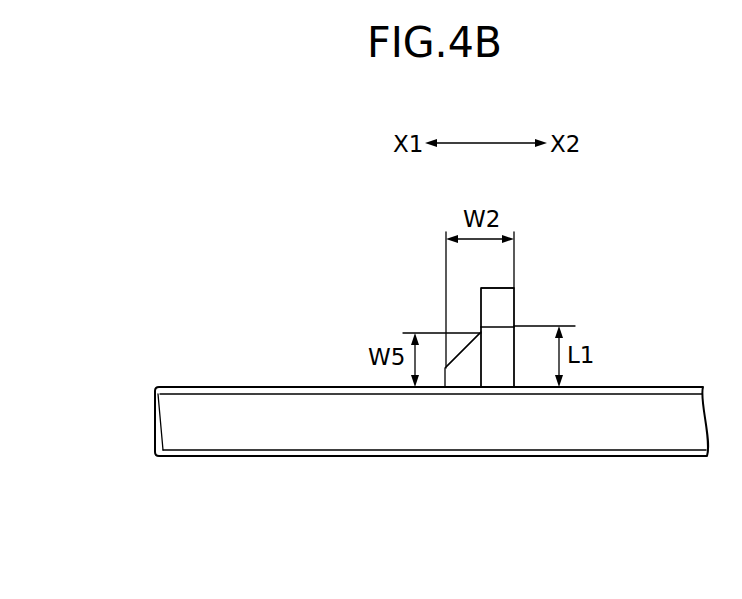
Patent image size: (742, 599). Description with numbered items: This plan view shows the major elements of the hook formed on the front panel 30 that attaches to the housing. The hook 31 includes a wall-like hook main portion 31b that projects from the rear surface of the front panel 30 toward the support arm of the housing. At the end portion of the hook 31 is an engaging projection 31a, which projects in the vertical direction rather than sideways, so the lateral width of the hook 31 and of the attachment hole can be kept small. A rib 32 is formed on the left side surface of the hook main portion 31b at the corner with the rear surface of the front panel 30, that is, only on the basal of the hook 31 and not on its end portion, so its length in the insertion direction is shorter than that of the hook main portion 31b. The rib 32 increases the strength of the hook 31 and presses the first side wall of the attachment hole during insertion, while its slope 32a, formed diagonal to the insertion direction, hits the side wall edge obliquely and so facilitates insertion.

The front panel 30 is at (198, 450).
The hook 31 is at (540, 276).
The engaging projection 31a is at (502, 298).
The hook main portion 31b is at (510, 358).
The rib 32 is at (463, 377).
The slope 32a is at (455, 352).